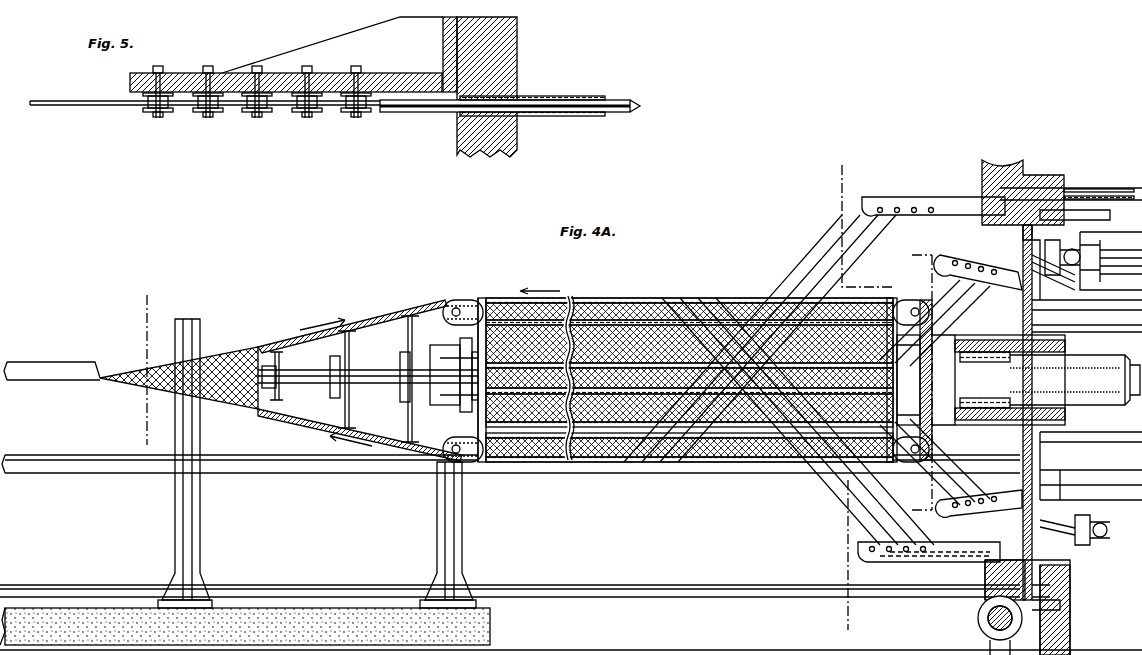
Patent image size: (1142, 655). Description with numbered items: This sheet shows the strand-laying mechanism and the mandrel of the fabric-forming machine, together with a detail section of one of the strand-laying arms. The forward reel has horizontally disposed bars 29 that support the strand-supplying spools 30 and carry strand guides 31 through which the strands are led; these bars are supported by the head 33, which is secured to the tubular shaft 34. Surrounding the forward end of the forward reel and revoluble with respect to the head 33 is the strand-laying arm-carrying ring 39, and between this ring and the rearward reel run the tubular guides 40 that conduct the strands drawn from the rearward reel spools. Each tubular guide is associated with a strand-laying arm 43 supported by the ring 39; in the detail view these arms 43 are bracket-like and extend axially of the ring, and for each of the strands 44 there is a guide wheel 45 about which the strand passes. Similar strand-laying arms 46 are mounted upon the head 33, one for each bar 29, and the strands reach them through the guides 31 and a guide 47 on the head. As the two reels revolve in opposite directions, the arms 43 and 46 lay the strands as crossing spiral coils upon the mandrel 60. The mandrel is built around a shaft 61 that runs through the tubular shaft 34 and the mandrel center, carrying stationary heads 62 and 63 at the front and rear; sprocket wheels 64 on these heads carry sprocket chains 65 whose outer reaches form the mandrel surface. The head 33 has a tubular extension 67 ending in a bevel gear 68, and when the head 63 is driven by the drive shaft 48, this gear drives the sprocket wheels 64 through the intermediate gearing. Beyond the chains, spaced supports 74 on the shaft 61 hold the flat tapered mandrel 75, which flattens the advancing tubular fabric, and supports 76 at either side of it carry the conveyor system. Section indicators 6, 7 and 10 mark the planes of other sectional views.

In FIG. 4A, the section line 6- 6 is at (858, 172).
In FIG. 4A, the section line 7- 7 is at (920, 258).
In FIG. 4A, the section line 10- 10 is at (155, 303).
In FIG. 4A, the horizontally disposed bars 29 is at (1080, 296).
In FIG. 4A, the strand-supplying spools 30 is at (1080, 540).
In FIG. 4A, the strand guides 31 is at (1068, 246).
In FIG. 4A, the head 33 is at (1040, 322).
In FIG. 4A, the tubular shaft 34 is at (1075, 380).
In FIG. 5, the strand-laying arm-carrying ring 39 is at (500, 75).
In FIG. 4A, the strand-laying arm-carrying ring 39 is at (1018, 162).
In FIG. 5, the tubular guides 40 is at (604, 100).
In FIG. 4A, the tubular guides 40 is at (1082, 210).
In FIG. 5, the strand-laying arm 43 is at (286, 54).
In FIG. 4A, the strand-laying arm 43 is at (915, 203).
In FIG. 5, the strands 44 is at (86, 103).
In FIG. 5, the guide wheel 45 is at (158, 117).
In FIG. 4A, the strand-laying arms 46 is at (1000, 288).
In FIG. 4A, the guide 47 is at (1040, 275).
In FIG. 4A, the drive shaft 48 is at (668, 585).
In FIG. 4A, the mandrel 60 is at (685, 379).
In FIG. 4A, the shaft 61 is at (355, 378).
In FIG. 4A, the stationary head 62 is at (475, 406).
In FIG. 4A, the stationary head 63 is at (890, 455).
In FIG. 4A, the sprocket wheels 64 is at (460, 300).
In FIG. 4A, the sprocket chains 65 is at (596, 299).
In FIG. 4A, the tubular extension 67 is at (964, 340).
In FIG. 4A, the bevel gear 68 is at (925, 388).
In FIG. 4A, the spaced supports 74 is at (352, 345).
In FIG. 4A, the flat tapered mandrel 75 is at (360, 380).
In FIG. 4A, the supports 76 is at (200, 537).